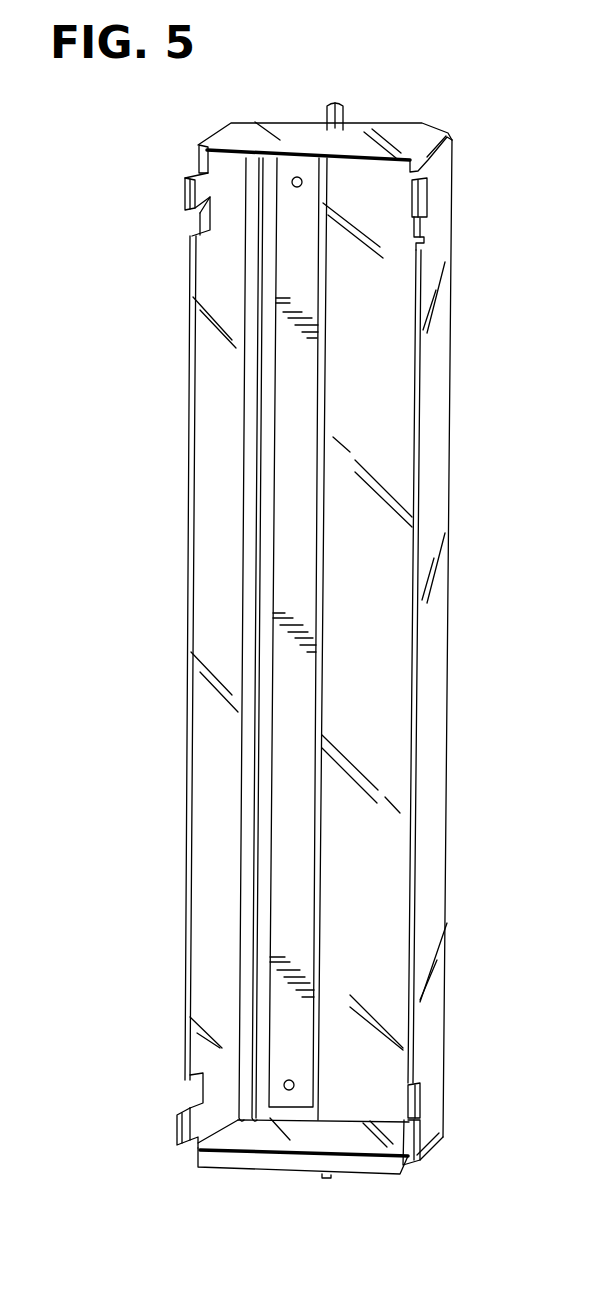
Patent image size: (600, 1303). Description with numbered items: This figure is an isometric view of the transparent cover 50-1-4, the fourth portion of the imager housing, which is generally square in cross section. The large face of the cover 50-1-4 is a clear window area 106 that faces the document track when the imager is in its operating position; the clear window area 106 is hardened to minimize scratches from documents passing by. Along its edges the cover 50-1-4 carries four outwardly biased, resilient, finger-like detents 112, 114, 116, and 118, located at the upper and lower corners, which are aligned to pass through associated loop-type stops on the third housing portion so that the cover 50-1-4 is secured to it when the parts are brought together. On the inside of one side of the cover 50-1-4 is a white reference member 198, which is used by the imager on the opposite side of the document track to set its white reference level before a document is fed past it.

The cover 50-1-4 is at (188, 444).
The clear window area 106 is at (387, 570).
The finger-like detent 112 is at (185, 182).
The finger-like detent 114 is at (420, 200).
The finger-like detent 116 is at (177, 1123).
The finger-like detent 118 is at (423, 1140).
The white reference member 198 is at (292, 257).